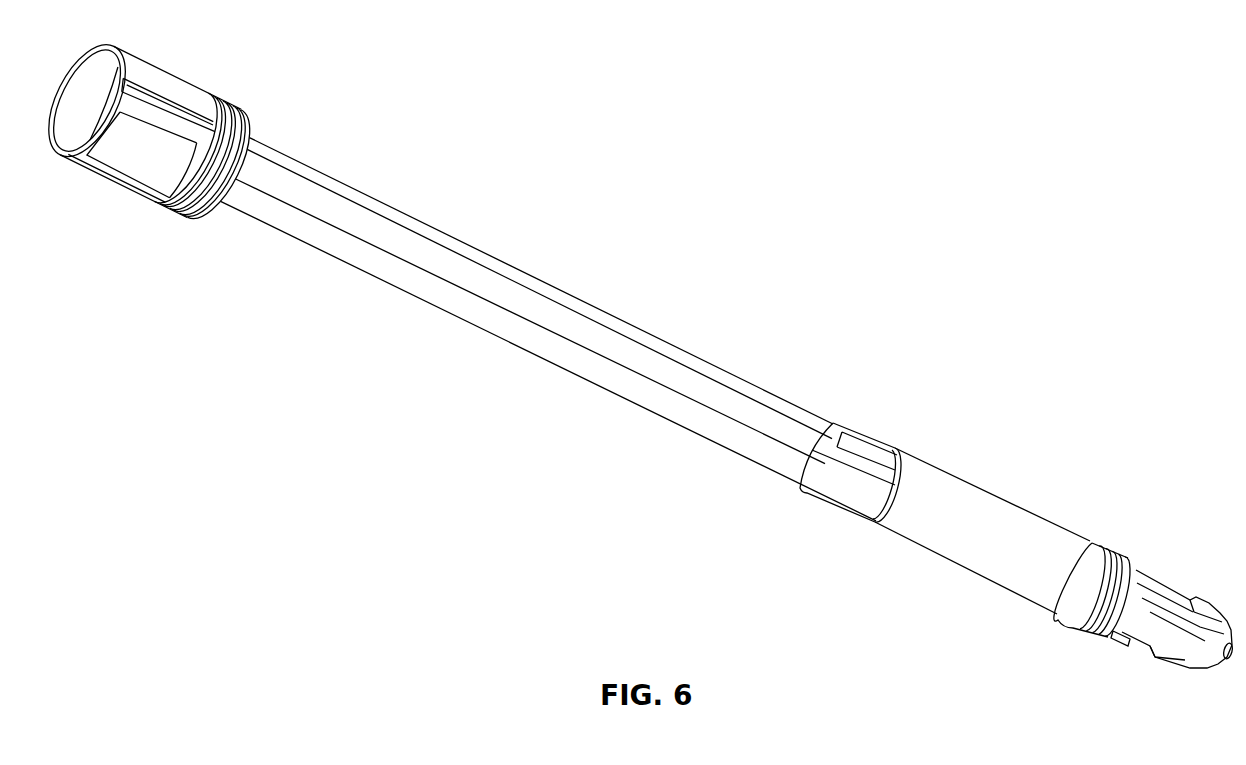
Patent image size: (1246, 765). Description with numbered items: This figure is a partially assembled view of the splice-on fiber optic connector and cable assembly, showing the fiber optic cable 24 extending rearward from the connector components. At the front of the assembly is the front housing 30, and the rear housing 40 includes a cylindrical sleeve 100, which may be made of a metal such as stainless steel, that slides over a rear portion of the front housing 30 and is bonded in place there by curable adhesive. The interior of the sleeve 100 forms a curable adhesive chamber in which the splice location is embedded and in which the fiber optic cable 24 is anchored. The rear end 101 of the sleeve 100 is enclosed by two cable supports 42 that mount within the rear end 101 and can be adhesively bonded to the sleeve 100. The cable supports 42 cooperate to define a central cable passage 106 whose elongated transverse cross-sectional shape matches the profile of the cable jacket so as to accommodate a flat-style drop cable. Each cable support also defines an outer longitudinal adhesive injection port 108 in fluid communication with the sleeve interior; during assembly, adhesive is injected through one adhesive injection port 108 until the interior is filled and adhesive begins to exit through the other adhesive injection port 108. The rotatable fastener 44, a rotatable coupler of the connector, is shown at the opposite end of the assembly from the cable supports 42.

The fiber optic cable 24 is at (514, 261).
The front housing 30 is at (1158, 578).
The rear housing 40 is at (1033, 518).
The cable supports 42 is at (853, 430).
The rotatable fastener 44 is at (187, 77).
The sleeve 100 is at (967, 487).
The rear end of the sleeve 101 is at (900, 448).
The central cable passage 106 is at (835, 430).
The adhesive injection port 108 is at (860, 468).